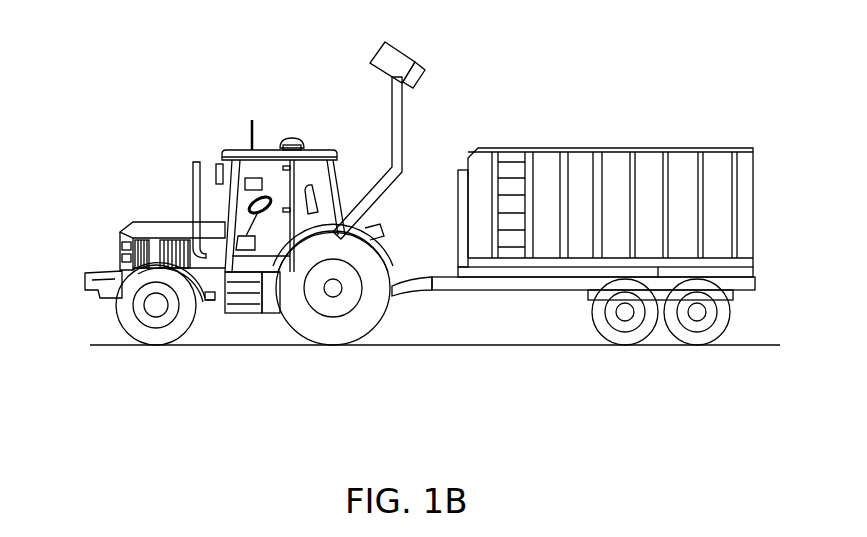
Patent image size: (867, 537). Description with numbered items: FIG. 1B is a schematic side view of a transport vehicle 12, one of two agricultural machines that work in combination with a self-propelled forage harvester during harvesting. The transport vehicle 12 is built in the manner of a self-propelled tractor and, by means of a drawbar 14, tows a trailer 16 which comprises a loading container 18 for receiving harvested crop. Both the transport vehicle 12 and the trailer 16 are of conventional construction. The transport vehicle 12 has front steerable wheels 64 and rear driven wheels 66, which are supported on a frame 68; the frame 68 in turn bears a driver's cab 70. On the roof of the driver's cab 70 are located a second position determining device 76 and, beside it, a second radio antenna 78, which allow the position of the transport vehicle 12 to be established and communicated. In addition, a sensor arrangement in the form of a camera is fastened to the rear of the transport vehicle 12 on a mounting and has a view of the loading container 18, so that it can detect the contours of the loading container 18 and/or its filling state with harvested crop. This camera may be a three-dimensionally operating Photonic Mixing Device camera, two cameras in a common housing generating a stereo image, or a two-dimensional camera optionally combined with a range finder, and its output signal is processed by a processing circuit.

The transport vehicle 12 is at (240, 349).
The drawbar 14 is at (410, 290).
The trailer 16 is at (586, 347).
The loading container 18 is at (650, 178).
The front steerable wheels 64 is at (130, 322).
The rear driven wheels 66 is at (333, 328).
The frame 68 is at (268, 300).
The driver's cab 70 is at (330, 150).
The second position determining device 76 is at (289, 138).
The second radio antenna 78 is at (256, 122).